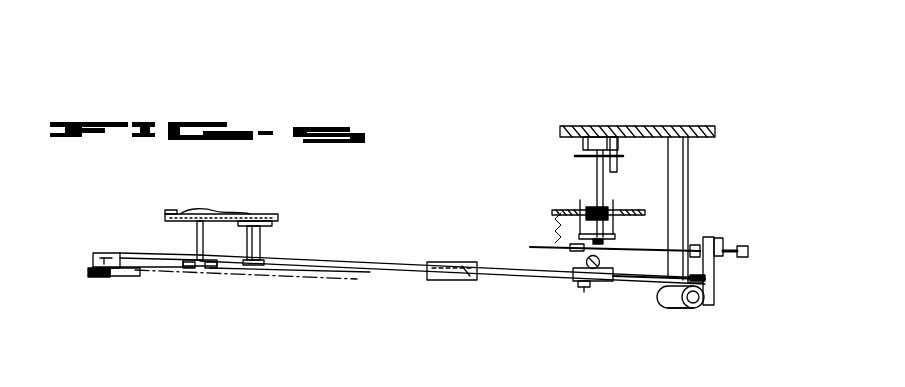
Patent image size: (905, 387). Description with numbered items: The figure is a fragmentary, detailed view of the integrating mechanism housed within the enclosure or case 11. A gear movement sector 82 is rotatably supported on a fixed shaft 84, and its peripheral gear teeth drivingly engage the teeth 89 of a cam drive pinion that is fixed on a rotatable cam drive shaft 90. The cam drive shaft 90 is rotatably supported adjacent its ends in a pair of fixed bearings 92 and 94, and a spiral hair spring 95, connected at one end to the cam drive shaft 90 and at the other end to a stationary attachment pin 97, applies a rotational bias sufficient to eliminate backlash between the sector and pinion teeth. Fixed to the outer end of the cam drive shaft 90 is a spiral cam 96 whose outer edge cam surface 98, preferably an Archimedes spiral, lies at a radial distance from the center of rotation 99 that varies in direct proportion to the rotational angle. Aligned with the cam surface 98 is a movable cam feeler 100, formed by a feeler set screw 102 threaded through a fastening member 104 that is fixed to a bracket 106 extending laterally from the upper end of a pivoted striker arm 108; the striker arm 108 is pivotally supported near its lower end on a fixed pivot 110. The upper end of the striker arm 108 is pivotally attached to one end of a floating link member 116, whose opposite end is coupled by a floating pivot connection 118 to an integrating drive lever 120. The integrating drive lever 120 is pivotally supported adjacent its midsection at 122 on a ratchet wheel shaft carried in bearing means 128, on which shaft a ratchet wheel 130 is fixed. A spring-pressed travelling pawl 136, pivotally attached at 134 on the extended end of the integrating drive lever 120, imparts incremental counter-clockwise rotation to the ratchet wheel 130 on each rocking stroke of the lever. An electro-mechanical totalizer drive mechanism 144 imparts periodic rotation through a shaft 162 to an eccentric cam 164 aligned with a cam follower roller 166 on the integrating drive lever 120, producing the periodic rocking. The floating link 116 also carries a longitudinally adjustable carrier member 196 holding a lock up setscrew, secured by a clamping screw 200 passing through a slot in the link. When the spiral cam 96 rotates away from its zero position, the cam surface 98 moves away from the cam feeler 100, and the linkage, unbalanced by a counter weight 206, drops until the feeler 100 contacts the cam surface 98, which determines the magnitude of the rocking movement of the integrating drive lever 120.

The case 11 is at (658, 127).
The gear movement sector 82 is at (640, 212).
The fixed shaft 84 is at (597, 182).
The teeth 89 is at (596, 212).
The cam drive shaft 90 is at (590, 138).
The fixed bearing 92 is at (610, 247).
The fixed bearing 94 is at (615, 138).
The spiral hair spring 95 is at (585, 156).
The spiral cam 96 is at (565, 250).
The stationary attachment pin 97 is at (612, 174).
The cam surface 98 is at (557, 246).
The center of rotation 99 is at (578, 247).
The cam feeler 100 is at (698, 237).
The feeler set screw 102 is at (733, 249).
The fastening member 104 is at (722, 242).
The bracket 106 is at (716, 279).
The striker arm 108 is at (690, 310).
The fixed pivot 110 is at (672, 308).
The floating link member 116 is at (546, 281).
The floating pivot connection 118 is at (465, 262).
The integrating drive lever 120 is at (348, 259).
The pivot 122 is at (262, 240).
The bearing means 128 is at (270, 225).
The ratchet wheel 130 is at (303, 281).
The pivot 134 is at (118, 253).
The spring-pressed travelling pawl 136 is at (122, 277).
The electro-mechanical totalizer drive mechanism 144 is at (218, 212).
The shaft 162 is at (201, 244).
The eccentric cam 164 is at (210, 268).
The cam follower roller 166 is at (196, 268).
The carrier member 196 is at (614, 282).
The clamping screw 200 is at (583, 288).
The counter weight 206 is at (462, 281).